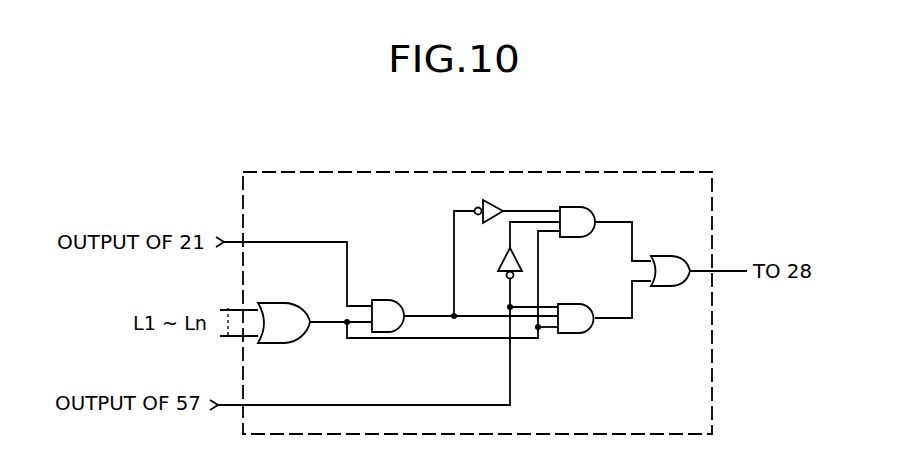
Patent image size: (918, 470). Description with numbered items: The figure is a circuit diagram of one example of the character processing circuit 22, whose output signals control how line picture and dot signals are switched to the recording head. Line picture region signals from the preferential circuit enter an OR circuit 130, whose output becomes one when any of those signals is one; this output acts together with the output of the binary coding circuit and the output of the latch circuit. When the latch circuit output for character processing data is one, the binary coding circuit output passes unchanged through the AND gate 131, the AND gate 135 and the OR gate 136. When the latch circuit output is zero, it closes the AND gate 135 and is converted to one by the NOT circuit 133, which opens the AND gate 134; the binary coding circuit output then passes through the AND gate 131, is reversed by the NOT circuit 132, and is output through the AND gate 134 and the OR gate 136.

The character processing circuit 22 is at (396, 172).
The OR circuit 130 is at (305, 290).
The AND gate 131 is at (397, 300).
The NOT circuit 132 is at (490, 203).
The NOT circuit 133 is at (502, 263).
The AND gate 134 is at (600, 198).
The AND gate 135 is at (585, 334).
The OR gate 136 is at (678, 256).